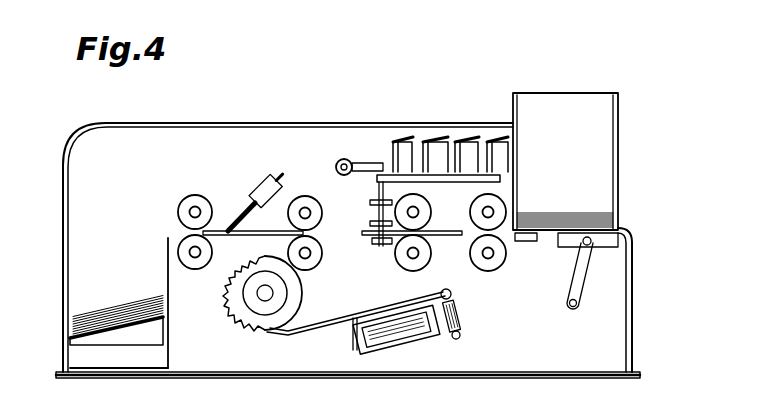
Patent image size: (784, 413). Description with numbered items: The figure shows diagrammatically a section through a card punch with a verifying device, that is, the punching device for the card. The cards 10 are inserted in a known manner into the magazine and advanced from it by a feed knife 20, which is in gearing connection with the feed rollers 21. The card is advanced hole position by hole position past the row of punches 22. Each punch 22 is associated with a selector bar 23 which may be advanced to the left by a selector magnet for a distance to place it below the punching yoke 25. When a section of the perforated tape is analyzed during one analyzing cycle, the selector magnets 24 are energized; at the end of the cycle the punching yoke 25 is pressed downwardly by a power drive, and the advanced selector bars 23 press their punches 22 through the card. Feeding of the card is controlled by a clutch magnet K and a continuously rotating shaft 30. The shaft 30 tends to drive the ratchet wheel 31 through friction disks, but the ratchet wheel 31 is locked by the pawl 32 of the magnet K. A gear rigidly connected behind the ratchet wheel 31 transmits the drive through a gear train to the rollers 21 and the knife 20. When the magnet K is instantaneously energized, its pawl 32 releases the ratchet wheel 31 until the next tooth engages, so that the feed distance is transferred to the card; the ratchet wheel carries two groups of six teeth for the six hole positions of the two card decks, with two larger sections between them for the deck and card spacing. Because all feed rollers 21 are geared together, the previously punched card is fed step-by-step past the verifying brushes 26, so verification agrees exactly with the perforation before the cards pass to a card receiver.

The cards 10 is at (549, 220).
The feed knife 20 is at (607, 247).
The feed rollers 21 is at (205, 208).
The punches 22 is at (377, 213).
The selector bar 23 is at (452, 182).
The selector magnets 24 is at (435, 152).
The punching yoke 25 is at (368, 162).
The verifying brushes 26 is at (243, 210).
The shaft 30 is at (264, 299).
The ratchet wheel 31 is at (234, 308).
The pawl 32 is at (335, 327).
The clutch magnet K is at (392, 334).